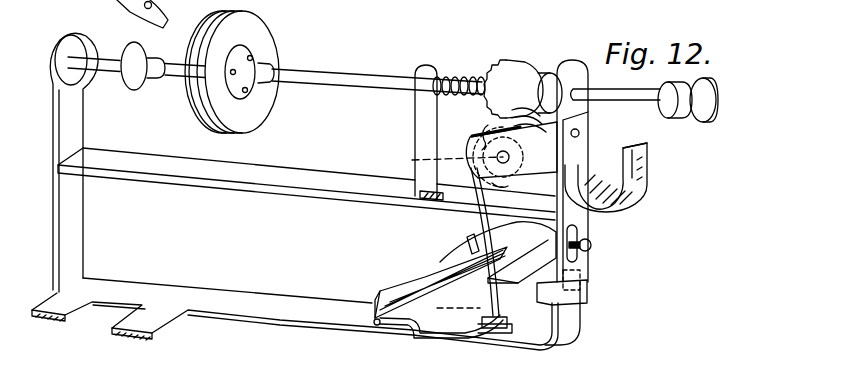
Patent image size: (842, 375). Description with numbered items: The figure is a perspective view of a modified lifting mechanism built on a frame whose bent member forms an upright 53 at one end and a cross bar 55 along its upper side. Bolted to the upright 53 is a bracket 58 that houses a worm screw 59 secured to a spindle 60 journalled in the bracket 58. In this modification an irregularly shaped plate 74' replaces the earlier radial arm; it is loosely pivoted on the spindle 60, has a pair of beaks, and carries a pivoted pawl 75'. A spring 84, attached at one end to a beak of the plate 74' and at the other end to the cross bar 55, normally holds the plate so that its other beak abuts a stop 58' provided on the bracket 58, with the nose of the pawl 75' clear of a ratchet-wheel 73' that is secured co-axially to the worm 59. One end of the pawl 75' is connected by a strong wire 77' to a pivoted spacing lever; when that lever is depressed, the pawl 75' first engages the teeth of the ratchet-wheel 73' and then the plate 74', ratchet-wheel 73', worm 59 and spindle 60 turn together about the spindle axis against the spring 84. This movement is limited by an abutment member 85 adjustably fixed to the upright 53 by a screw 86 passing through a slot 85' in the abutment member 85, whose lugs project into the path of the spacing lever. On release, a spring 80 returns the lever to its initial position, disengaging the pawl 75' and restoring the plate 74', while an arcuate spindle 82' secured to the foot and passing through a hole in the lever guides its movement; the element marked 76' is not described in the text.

The upright 53 is at (565, 316).
The cross bar 55 is at (338, 183).
The bracket 58 is at (587, 177).
The stop 58' is at (600, 132).
The worm screw 59 is at (527, 108).
The spindle 60 is at (511, 154).
The ratchet-wheel 73' is at (393, 103).
The irregularly shaped plate 74' is at (465, 133).
The pivoted pawl 75' is at (461, 65).
The pedal lever 76' is at (440, 286).
The strong wire 77' is at (460, 234).
The spring 80 is at (443, 320).
The arcuate spindle 82' is at (491, 270).
The spring 84 is at (436, 201).
The abutment member 85 is at (592, 276).
The slot 85' is at (596, 241).
The screw 86 is at (591, 247).